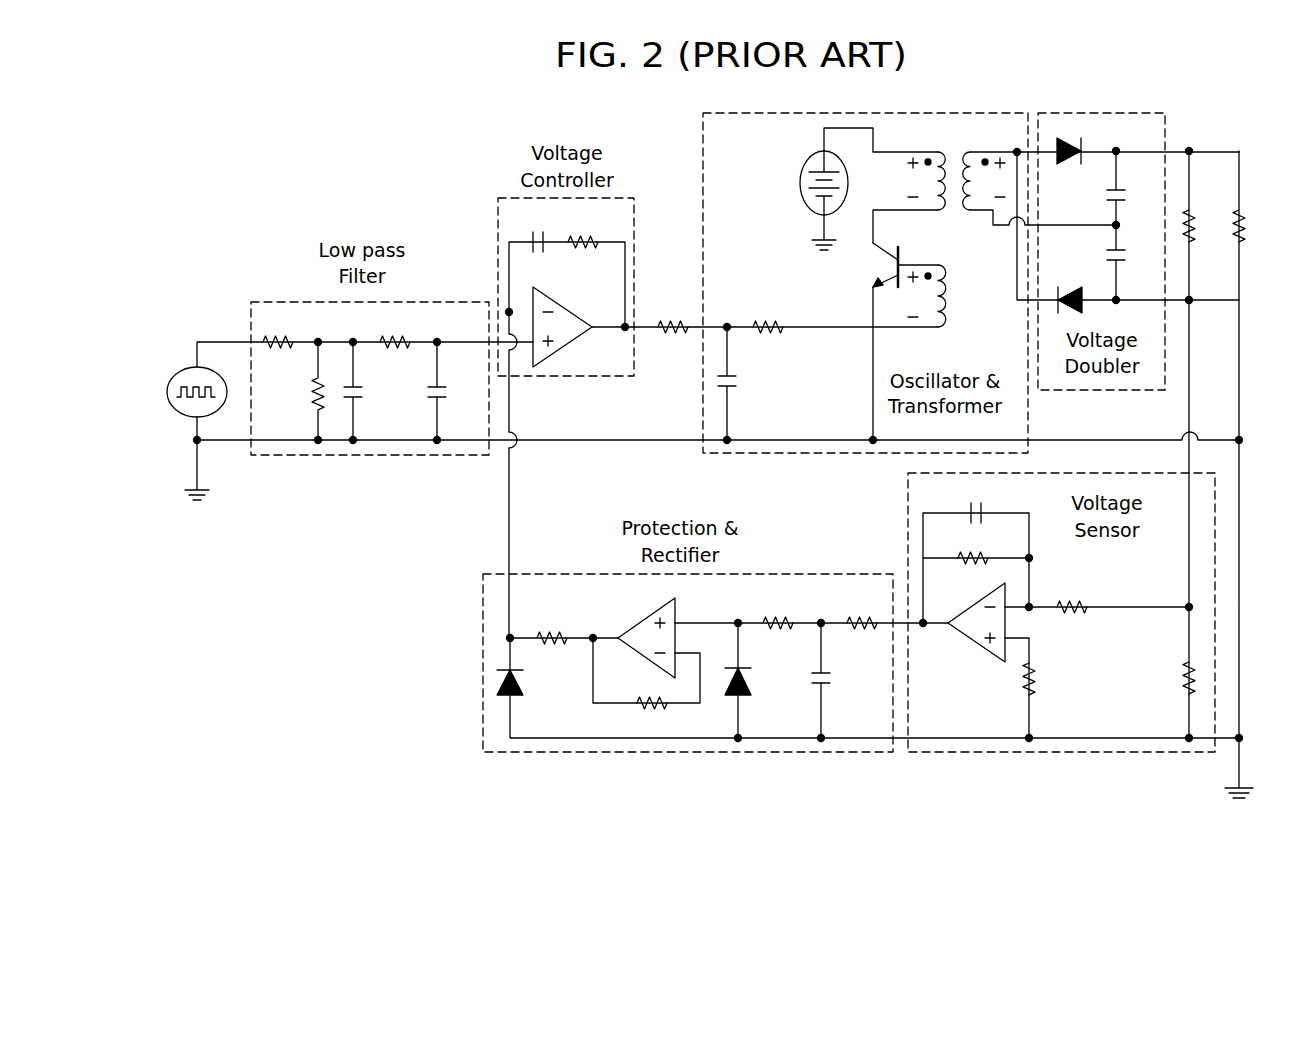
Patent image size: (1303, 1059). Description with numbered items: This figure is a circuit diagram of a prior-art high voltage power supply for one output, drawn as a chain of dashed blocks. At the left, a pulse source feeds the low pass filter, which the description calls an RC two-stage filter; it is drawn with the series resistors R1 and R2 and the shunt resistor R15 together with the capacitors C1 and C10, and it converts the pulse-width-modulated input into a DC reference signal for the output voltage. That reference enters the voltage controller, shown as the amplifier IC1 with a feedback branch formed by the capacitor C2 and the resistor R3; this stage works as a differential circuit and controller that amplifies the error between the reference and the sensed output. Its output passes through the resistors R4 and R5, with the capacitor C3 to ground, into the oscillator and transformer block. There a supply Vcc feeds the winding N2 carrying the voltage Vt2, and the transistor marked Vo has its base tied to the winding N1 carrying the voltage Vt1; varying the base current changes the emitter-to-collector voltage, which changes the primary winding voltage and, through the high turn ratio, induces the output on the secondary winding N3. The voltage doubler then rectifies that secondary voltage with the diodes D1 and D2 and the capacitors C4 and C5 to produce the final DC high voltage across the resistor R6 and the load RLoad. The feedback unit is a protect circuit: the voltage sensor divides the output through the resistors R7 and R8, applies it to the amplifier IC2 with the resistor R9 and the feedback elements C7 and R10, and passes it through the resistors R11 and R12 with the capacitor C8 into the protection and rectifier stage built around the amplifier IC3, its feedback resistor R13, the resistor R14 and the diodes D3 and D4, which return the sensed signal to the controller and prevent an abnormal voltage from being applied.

The resistor R1 of low pass filter R1 is at (278, 331).
The resistor R2 of low pass filter R2 is at (395, 331).
The resistor R15 of low pass filter R15 is at (303, 391).
The capacitor C1 of low pass filter C1 is at (370, 391).
The capacitor C10 of low pass filter C10 is at (456, 391).
The operational amplifier of voltage controller IC1 is at (566, 323).
The feedback capacitor C2 is at (537, 228).
The feedback resistor R3 is at (583, 228).
The resistor R4 is at (673, 316).
The resistor R5 is at (768, 316).
The capacitor C3 is at (743, 383).
The supply voltage source Vcc is at (814, 189).
The transformer primary winding N1 is at (927, 282).
The transformer winding N2 is at (926, 167).
The transformer secondary winding N3 is at (984, 167).
The winding voltage Vt1 is at (916, 298).
The winding voltage Vt2 is at (898, 178).
The oscillator transistor / output voltage Vo is at (874, 265).
The diode D1 of voltage doubler D1 is at (1072, 165).
The diode D2 of voltage doubler D2 is at (1072, 286).
The capacitor C4 of voltage doubler C4 is at (1130, 188).
The capacitor C5 of voltage doubler C5 is at (1130, 262).
The resistor R6 is at (1201, 226).
The load resistor RLoad is at (1249, 227).
The resistor R14 of protection and rectifier R14 is at (550, 625).
The operational amplifier of protection and rectifier IC3 is at (646, 634).
The feedback resistor R13 is at (650, 690).
The diode D4 is at (524, 682).
The resistor R12 is at (778, 612).
The resistor R11 is at (861, 612).
The diode D3 is at (753, 680).
The capacitor C8 is at (837, 680).
The operational amplifier of voltage sensor IC2 is at (976, 627).
The feedback capacitor C7 is at (978, 501).
The feedback resistor R10 is at (972, 547).
The resistor R7 of voltage sensor R7 is at (1072, 593).
The resistor R9 of voltage sensor R9 is at (1042, 679).
The resistor R8 of voltage sensor R8 is at (1178, 678).